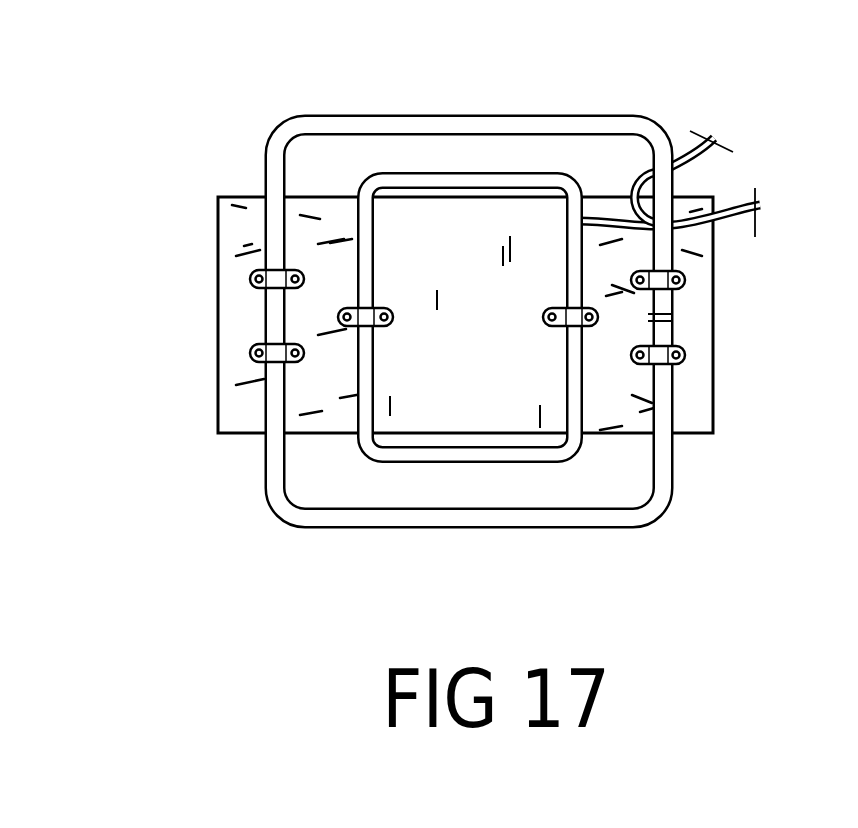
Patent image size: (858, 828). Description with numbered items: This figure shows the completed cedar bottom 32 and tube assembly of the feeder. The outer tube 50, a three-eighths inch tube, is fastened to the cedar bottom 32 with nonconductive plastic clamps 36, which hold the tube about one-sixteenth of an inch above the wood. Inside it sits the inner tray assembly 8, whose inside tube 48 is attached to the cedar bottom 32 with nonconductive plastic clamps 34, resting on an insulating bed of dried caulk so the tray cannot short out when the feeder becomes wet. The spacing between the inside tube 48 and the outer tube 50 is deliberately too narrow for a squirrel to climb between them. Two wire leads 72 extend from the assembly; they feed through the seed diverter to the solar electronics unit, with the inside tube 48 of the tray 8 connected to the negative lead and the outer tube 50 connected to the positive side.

The inner tray assembly 8 is at (428, 218).
The cedar bottom 32 is at (217, 225).
The plastic clamps 34 is at (553, 320).
The plastic clamps 36 is at (258, 354).
The inside tube 48 is at (556, 188).
The outer tube 50 is at (275, 148).
The wire leads 72 is at (720, 140).